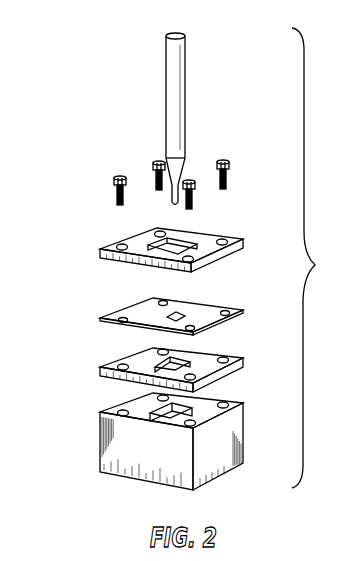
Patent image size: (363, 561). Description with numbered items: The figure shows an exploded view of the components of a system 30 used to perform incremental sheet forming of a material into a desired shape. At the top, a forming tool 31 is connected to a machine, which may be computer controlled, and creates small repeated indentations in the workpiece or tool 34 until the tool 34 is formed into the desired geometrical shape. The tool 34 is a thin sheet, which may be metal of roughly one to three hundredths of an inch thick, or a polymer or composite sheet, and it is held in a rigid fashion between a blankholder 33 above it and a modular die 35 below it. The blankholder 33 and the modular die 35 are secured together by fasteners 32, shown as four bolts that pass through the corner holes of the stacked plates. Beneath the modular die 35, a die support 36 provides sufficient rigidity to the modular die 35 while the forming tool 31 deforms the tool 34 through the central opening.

The system 30 is at (320, 258).
The forming tool 31 is at (168, 113).
The fasteners 32 is at (114, 190).
The blankholder 33 is at (100, 253).
The tool 34 is at (100, 318).
The modular die 35 is at (100, 370).
The die support 36 is at (105, 433).